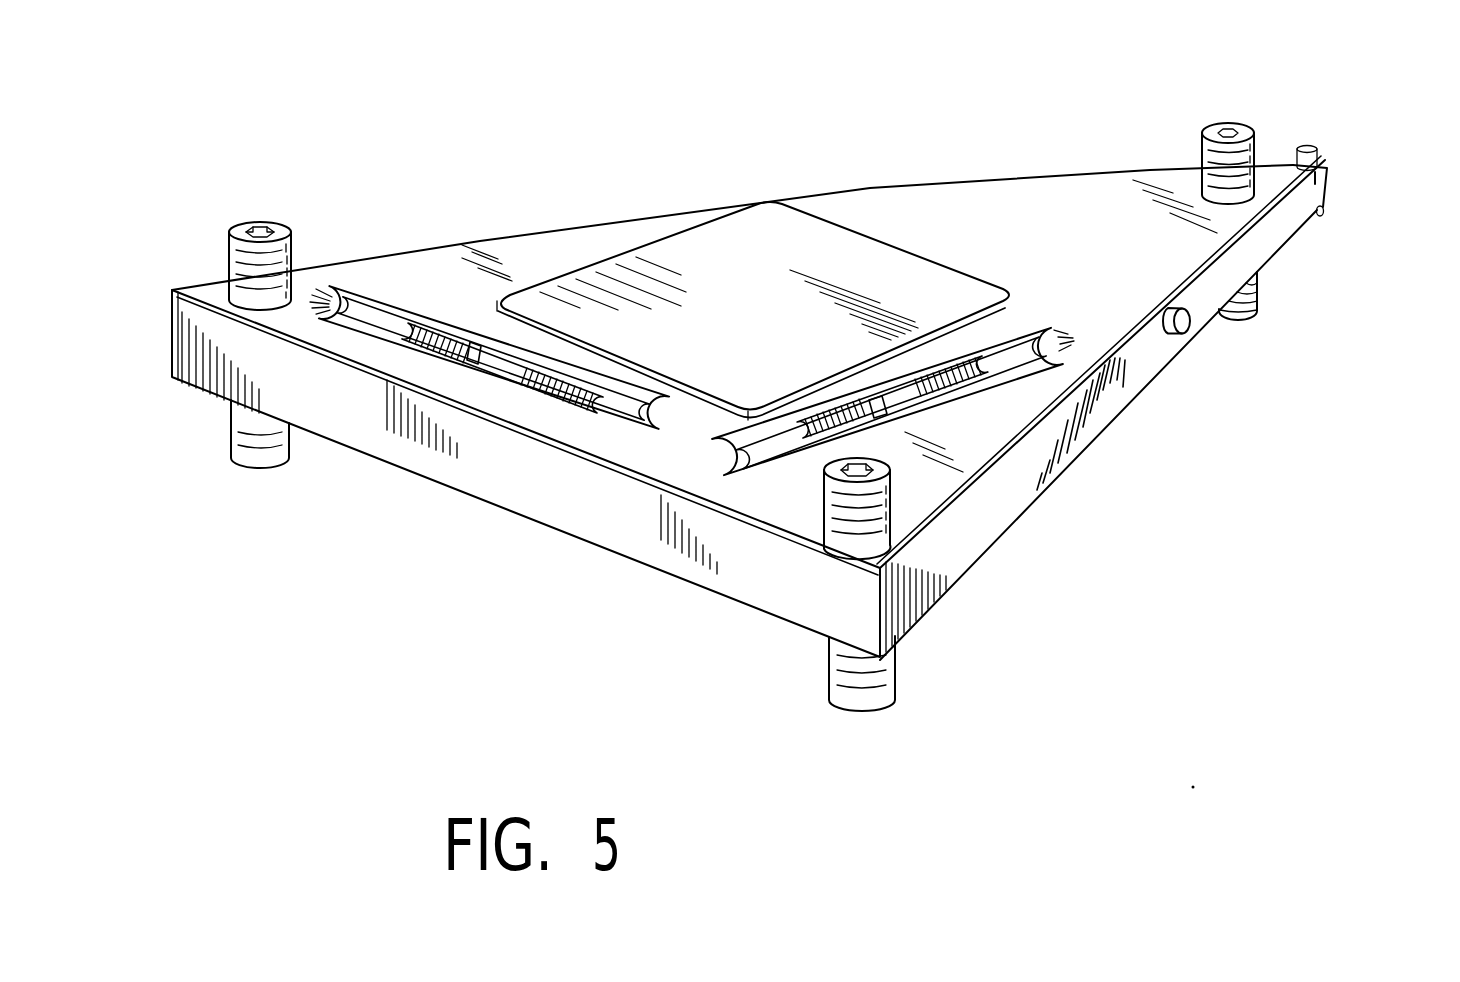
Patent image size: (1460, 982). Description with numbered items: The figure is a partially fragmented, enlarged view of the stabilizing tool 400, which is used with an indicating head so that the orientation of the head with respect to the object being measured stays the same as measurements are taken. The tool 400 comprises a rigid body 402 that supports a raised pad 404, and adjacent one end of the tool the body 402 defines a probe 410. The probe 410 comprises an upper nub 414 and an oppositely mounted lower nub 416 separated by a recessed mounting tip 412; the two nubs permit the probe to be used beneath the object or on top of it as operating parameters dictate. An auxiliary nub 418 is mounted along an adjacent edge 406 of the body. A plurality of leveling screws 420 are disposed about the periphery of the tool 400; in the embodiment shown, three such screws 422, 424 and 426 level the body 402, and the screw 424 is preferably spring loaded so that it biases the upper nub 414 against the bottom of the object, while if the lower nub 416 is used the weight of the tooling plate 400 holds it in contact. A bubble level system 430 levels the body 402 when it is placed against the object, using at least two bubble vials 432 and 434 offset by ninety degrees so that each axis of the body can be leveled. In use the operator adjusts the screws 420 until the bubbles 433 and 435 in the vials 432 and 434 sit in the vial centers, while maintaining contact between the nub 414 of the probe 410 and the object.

The stabilizing tool 400 is at (487, 169).
The rigid body 402 is at (927, 190).
The raised pad 404 is at (641, 258).
The adjacent edge 406 is at (1013, 500).
The probe 410 is at (1271, 122).
The recessed mounting tip 412 is at (1328, 175).
The upper nub 414 is at (1315, 146).
The lower nub 416 is at (1324, 211).
The auxiliary nub 418 is at (1170, 333).
The leveling screws 420 is at (248, 205).
The leveling screw 422 is at (285, 203).
The leveling screw 424 is at (1210, 128).
The leveling screw 426 is at (882, 697).
The bubble level system 430 is at (374, 361).
The bubble vial 432 is at (613, 428).
The bubble 433 is at (510, 370).
The bubble vial 434 is at (760, 463).
The bubble 435 is at (893, 408).